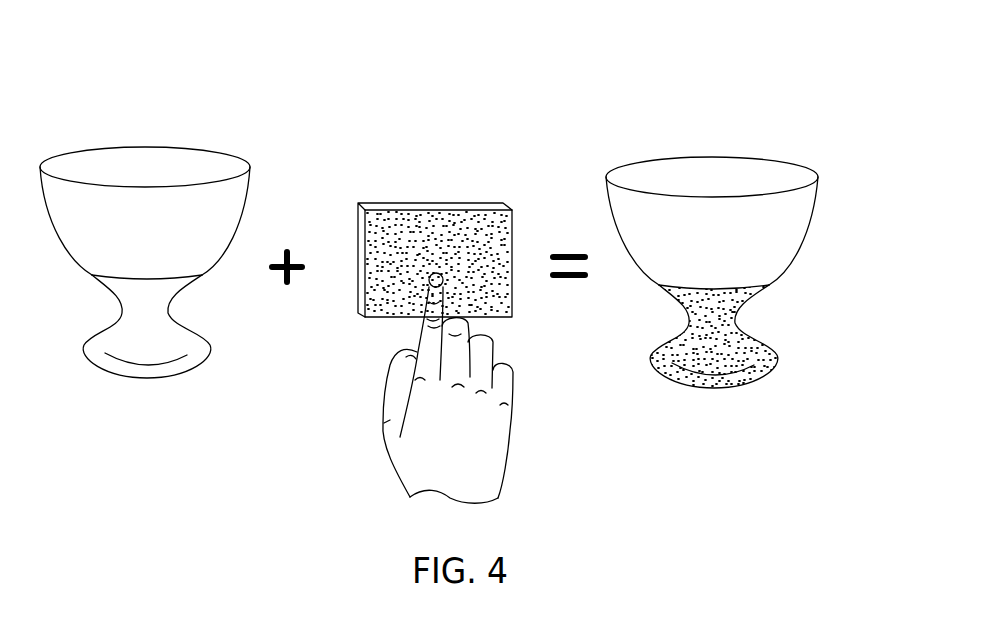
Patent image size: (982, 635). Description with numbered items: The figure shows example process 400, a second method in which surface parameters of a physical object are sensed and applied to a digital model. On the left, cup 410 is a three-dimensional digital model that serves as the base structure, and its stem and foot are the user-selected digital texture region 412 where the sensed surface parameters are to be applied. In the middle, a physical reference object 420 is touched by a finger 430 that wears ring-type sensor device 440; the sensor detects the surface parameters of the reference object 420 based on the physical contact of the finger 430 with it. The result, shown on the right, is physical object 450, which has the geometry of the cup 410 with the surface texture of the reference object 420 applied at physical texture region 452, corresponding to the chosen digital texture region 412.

The example process 400 is at (713, 80).
The cup 410 is at (185, 262).
The digital texture region 412 is at (167, 312).
The reference object 420 is at (512, 228).
The finger 430 is at (435, 273).
The ring-type sensor device 440 is at (406, 352).
The physical object 450 is at (751, 272).
The physical texture region 452 is at (734, 327).